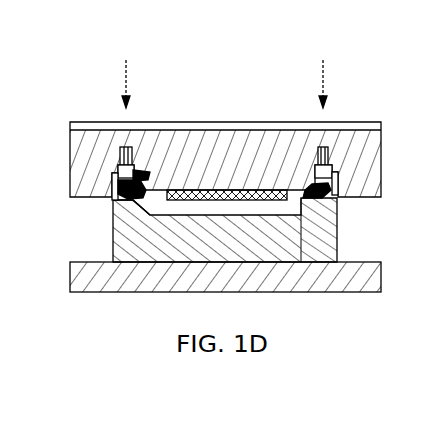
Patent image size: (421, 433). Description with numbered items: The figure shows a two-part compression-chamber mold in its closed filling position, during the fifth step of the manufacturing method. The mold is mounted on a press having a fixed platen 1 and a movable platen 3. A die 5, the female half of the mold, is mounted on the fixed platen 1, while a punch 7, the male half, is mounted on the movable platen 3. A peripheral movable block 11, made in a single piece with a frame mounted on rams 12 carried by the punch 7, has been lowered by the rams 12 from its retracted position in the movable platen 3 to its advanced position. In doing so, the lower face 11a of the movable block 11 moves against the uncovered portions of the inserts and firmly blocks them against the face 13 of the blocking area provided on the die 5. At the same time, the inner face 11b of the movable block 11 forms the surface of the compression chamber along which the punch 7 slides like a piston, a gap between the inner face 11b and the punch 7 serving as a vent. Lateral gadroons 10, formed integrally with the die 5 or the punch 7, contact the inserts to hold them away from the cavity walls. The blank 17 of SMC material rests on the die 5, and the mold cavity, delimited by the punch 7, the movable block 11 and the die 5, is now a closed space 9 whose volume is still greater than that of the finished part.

The fixed platen 1 is at (127, 278).
The movable platen 3 is at (328, 128).
The die 5 is at (171, 248).
The punch 7 is at (216, 150).
The closed space 9 is at (299, 198).
The lateral gadroon 10 is at (120, 184).
The peripheral movable block 11 is at (133, 158).
The lower face 11a is at (113, 177).
The inner face 11b is at (135, 170).
The rams 12 is at (146, 177).
The blocking area face 13 is at (124, 200).
The blank 17 is at (250, 196).